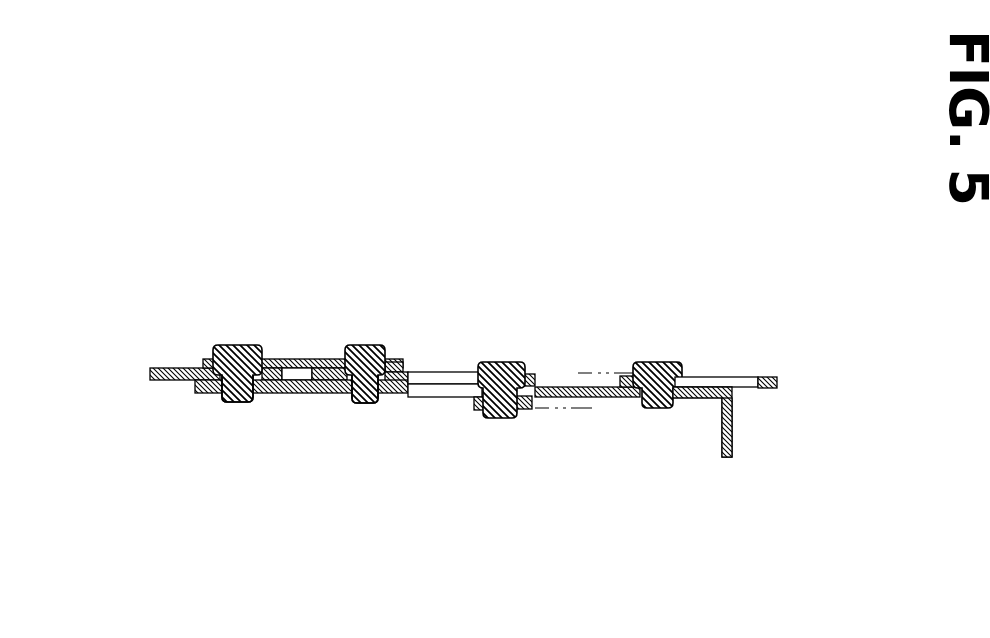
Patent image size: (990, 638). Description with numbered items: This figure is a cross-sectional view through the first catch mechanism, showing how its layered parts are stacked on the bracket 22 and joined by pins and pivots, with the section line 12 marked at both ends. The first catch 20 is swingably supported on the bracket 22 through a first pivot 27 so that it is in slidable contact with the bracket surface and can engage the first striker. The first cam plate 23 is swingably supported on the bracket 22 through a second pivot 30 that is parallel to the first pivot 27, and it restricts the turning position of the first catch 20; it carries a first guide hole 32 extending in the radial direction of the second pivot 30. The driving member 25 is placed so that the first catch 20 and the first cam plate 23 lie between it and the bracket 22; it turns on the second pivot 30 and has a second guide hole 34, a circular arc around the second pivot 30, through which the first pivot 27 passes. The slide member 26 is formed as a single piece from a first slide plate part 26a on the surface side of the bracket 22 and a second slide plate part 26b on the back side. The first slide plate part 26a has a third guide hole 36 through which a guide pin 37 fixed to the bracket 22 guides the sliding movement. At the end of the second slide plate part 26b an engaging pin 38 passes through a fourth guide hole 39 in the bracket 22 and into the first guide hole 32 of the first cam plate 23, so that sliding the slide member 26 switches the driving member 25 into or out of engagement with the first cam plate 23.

The section line 12 is at (106, 376).
The first catch 20 is at (168, 367).
The bracket 22 is at (300, 394).
The first cam plate 23 is at (398, 359).
The driving member 25 is at (295, 359).
The slide member 26 is at (762, 374).
The first slide plate part 26a is at (778, 396).
The second slide plate part 26b is at (478, 410).
The first pivot 27 is at (233, 403).
The second pivot 30 is at (360, 404).
The first guide hole 32 is at (230, 345).
The second guide hole 34 is at (445, 372).
The third guide hole 36 is at (703, 377).
The guide pin 37 is at (655, 362).
The engaging pin 38 is at (500, 364).
The fourth guide hole 39 is at (433, 397).